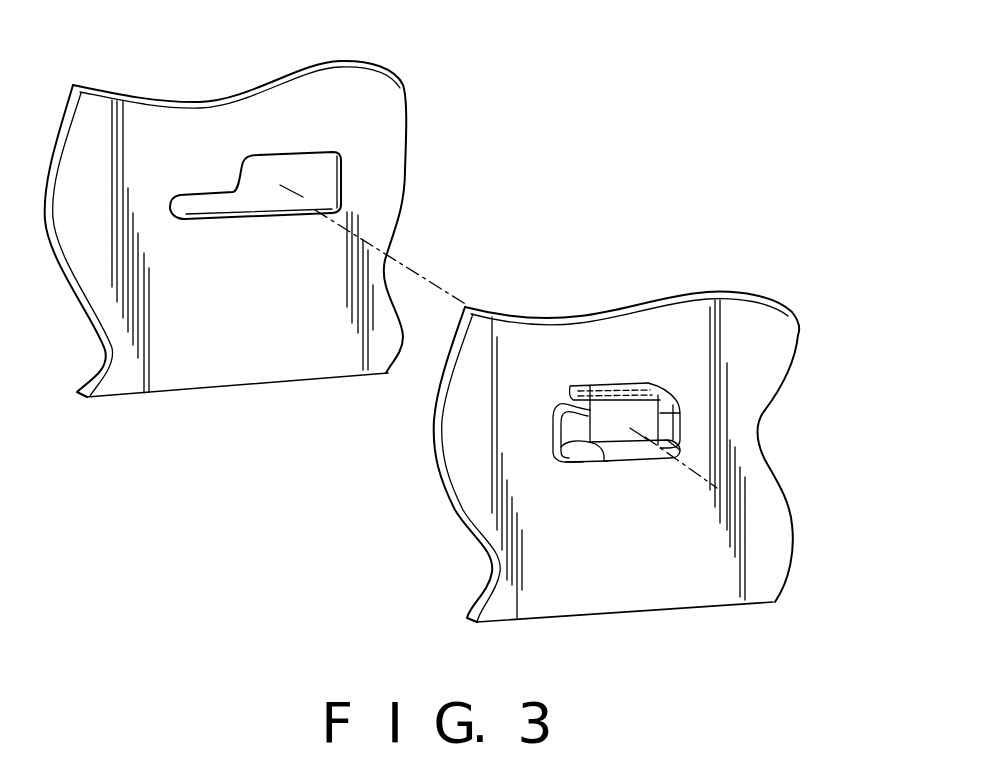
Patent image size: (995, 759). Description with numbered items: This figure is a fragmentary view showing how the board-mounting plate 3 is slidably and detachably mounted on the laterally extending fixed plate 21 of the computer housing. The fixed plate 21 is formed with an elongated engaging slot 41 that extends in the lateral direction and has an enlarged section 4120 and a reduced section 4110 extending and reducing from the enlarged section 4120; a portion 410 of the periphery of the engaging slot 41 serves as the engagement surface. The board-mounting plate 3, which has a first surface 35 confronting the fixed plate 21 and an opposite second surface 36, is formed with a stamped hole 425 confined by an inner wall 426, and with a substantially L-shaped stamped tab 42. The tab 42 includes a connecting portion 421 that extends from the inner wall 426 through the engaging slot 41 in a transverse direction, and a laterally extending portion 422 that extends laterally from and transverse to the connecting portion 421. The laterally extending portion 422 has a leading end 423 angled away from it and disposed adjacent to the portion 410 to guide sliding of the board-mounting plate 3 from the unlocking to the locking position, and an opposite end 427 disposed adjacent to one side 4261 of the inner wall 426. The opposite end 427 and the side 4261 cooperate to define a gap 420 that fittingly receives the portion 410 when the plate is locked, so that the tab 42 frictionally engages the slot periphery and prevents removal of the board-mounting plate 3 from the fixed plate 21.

The board-mounting plate 3 is at (722, 292).
The first surface 35 is at (660, 291).
The second surface 36 is at (752, 568).
The engaging slot 41 is at (253, 156).
The portion of a periphery of the engaging slot 410 is at (215, 180).
The reduced section 4110 is at (204, 204).
The enlarged section 4120 is at (305, 198).
The fixed plate 21 is at (318, 130).
The stamped tab 42 is at (609, 435).
The gap 420 is at (660, 426).
The connecting portion 421 is at (628, 450).
The laterally extending portion 422 is at (613, 415).
The leading end 423 is at (583, 436).
The stamped hole 425 is at (577, 450).
The inner wall 426 is at (582, 463).
The side of the inner wall 4261 is at (673, 442).
The opposite end 427 is at (663, 413).